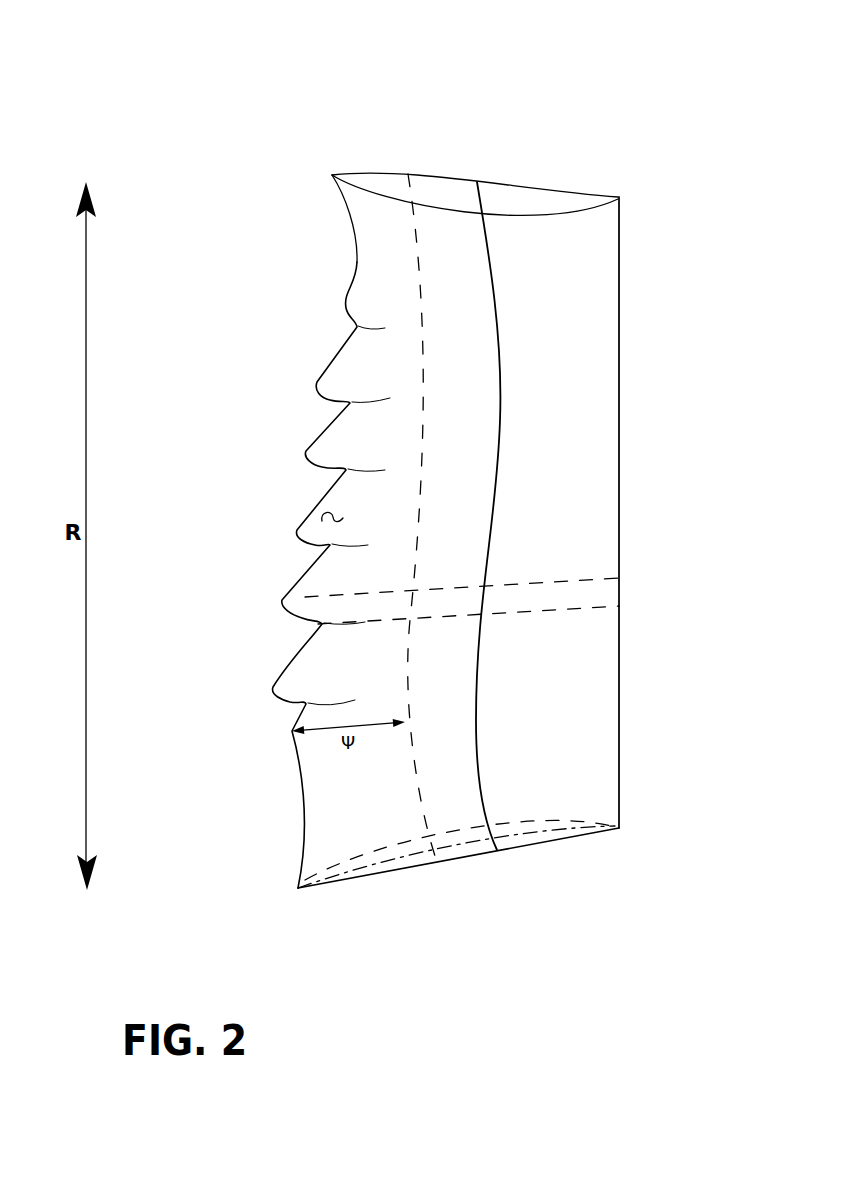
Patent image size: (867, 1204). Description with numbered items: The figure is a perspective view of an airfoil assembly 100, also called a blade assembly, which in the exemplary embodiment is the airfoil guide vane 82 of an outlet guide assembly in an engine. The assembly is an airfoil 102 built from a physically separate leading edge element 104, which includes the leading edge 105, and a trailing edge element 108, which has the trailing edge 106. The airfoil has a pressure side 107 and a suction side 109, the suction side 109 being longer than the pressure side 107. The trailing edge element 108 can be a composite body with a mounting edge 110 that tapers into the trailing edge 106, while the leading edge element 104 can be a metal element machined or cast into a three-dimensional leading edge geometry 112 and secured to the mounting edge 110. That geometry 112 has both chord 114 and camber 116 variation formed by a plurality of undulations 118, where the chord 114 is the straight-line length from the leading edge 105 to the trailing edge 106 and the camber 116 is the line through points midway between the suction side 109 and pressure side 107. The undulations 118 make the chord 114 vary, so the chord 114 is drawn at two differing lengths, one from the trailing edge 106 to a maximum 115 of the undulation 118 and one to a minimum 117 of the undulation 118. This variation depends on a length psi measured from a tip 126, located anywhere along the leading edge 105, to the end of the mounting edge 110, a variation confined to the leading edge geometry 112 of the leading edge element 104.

The airfoil assembly 100 is at (664, 50).
The airfoil guide vane 82 is at (662, 180).
The airfoil 102 is at (382, 183).
The leading edge element 104 is at (385, 256).
The leading edge 105 is at (348, 289).
The trailing edge 106 is at (619, 317).
The pressure side 107 is at (457, 863).
The trailing edge element 108 is at (560, 387).
The suction side 109 is at (528, 188).
The mounting edge 110 is at (416, 192).
The 3-D leading edge geometry 112 is at (320, 540).
The chord 114 is at (548, 578).
The maximum of the undulation 115 is at (283, 601).
The camber 116 is at (530, 833).
The minimum of the undulation 117 is at (324, 628).
The undulations 118 is at (317, 382).
The tip 126 is at (292, 733).